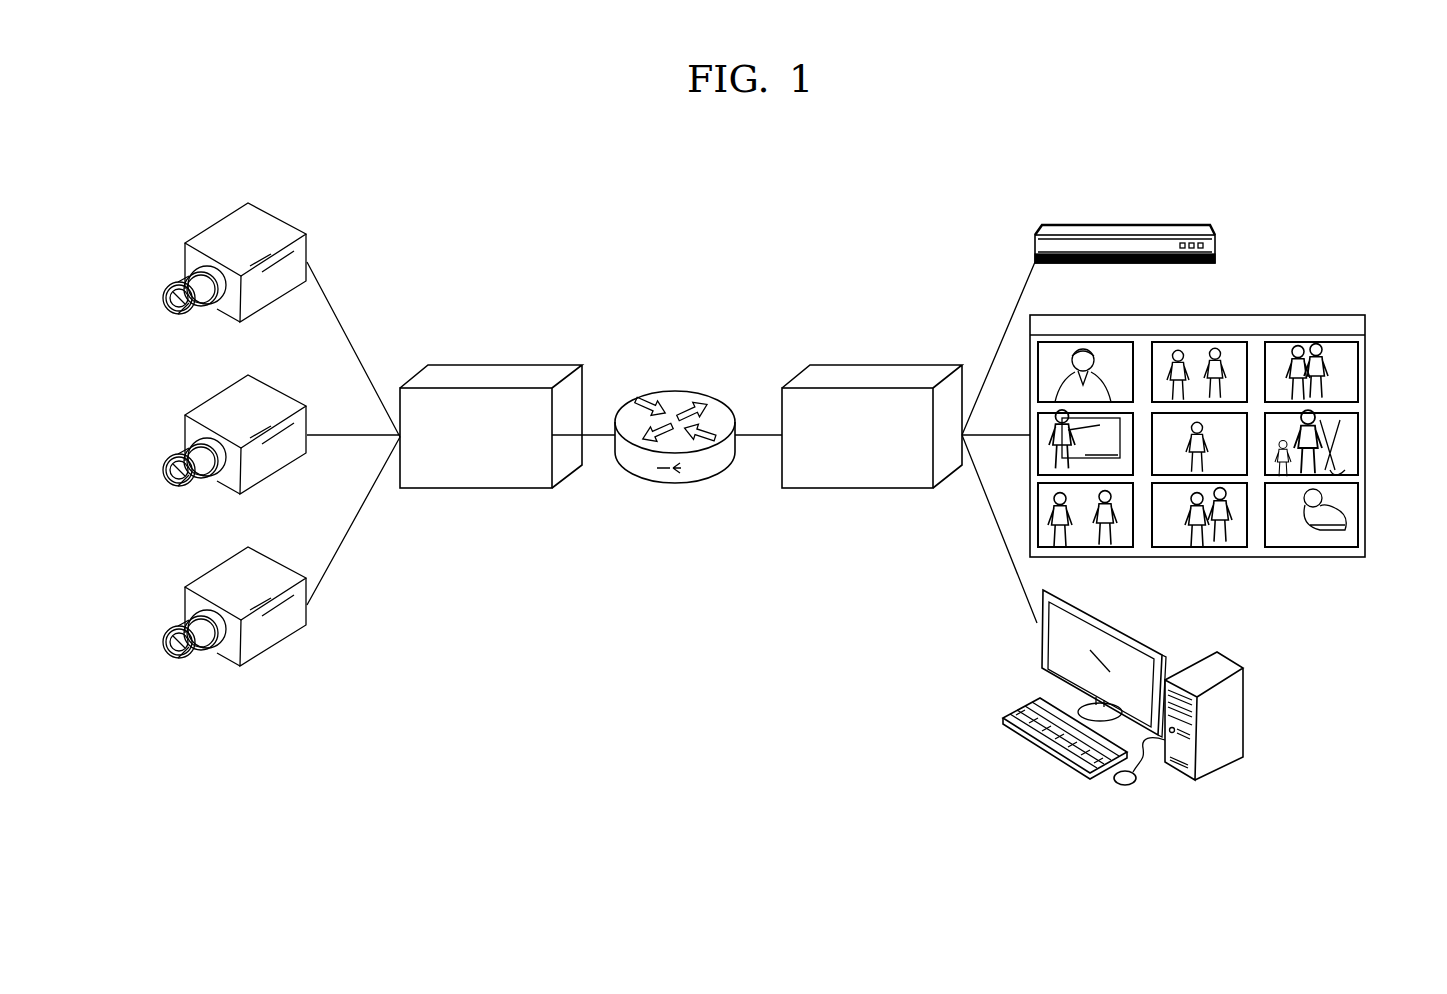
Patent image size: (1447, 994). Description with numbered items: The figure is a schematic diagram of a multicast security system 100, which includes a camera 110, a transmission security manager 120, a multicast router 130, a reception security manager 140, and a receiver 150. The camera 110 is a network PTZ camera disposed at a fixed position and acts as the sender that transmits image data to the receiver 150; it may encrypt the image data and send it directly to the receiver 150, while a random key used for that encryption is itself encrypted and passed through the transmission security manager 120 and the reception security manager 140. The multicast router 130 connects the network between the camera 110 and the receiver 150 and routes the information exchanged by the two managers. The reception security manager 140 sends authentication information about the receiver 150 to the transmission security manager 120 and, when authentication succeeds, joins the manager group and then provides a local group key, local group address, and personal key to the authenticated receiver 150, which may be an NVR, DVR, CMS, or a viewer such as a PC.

The multicast security system 100 is at (951, 166).
The camera 110 is at (147, 237).
The transmission security manager 120 is at (482, 490).
The multicast router 130 is at (672, 490).
The reception security manager 140 is at (852, 490).
The receiver 150 is at (1371, 219).